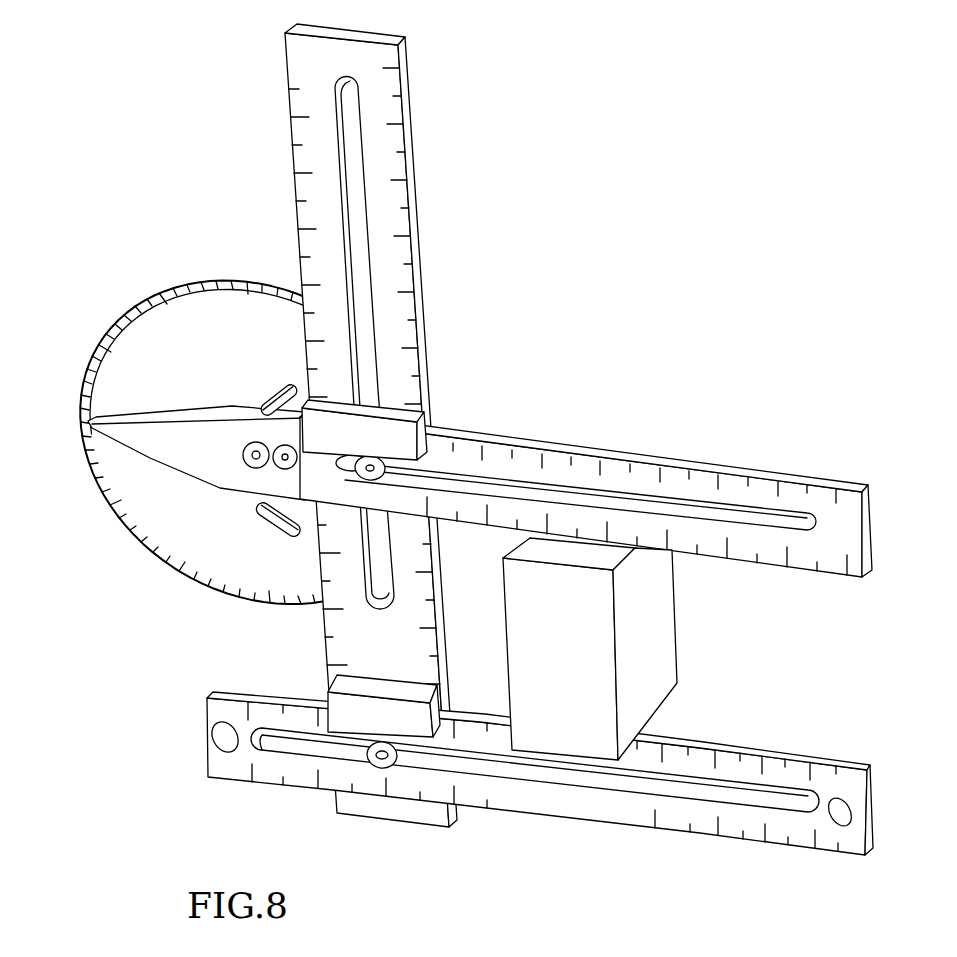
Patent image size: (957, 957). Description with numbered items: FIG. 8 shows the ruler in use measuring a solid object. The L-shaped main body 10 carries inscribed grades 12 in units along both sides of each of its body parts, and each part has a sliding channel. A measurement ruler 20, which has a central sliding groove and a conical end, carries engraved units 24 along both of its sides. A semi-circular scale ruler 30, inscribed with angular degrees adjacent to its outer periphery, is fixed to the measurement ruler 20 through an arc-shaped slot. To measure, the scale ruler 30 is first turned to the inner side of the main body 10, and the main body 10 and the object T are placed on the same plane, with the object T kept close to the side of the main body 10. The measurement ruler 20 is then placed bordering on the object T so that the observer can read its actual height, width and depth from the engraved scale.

The main body 10 is at (402, 185).
The inscribed grades 12 is at (413, 393).
The measurement ruler 20 is at (757, 492).
The units 24 is at (673, 462).
The scale ruler 30 is at (160, 322).
The object T is at (653, 633).